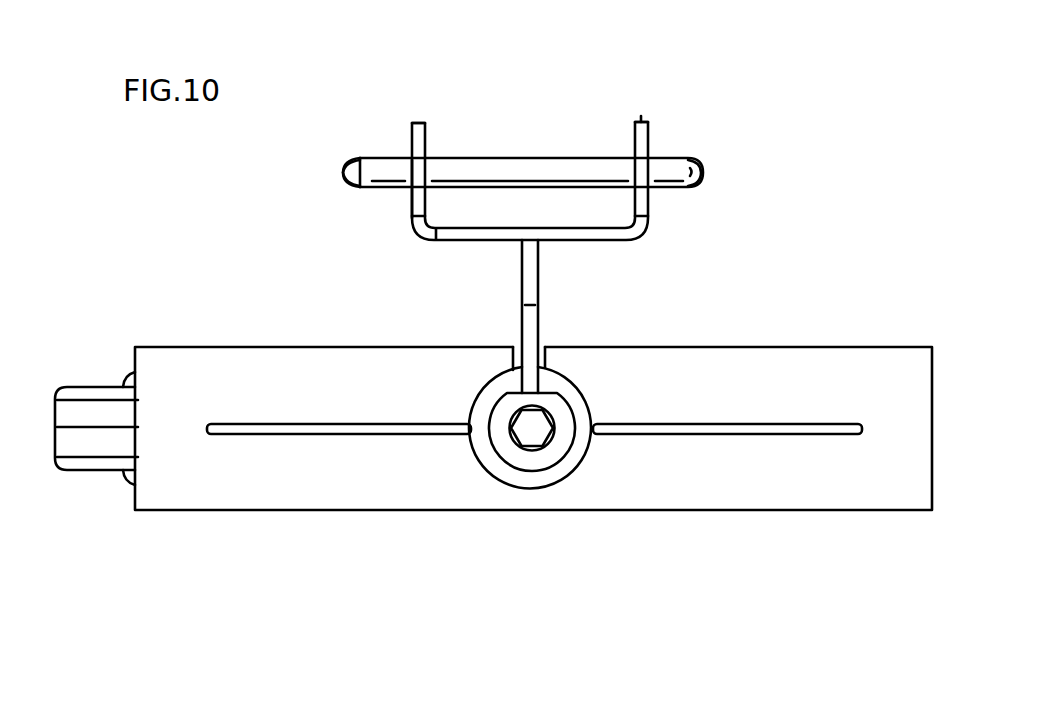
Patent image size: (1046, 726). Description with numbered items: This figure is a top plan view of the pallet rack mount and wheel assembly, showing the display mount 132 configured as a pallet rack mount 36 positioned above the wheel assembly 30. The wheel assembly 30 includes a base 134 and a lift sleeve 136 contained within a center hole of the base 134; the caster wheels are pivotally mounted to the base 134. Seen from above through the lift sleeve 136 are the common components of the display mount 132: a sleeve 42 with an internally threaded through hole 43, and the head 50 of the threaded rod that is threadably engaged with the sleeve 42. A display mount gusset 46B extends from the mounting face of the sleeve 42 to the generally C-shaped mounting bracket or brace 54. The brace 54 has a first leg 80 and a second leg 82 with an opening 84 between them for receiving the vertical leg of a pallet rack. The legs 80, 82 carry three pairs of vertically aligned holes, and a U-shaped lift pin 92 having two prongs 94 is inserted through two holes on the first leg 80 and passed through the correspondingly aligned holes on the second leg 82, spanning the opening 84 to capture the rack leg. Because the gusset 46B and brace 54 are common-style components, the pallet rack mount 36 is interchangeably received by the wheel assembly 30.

The wheel assembly 30 is at (493, 464).
The pallet rack mount 36 is at (652, 230).
The sleeve 42 is at (562, 442).
The internally threaded through hole 43 is at (541, 445).
The display mount gusset 46B is at (540, 281).
The head 50 is at (528, 433).
The mounting bracket 54 is at (396, 116).
The first leg 80 is at (648, 128).
The second leg 82 is at (406, 200).
The opening 84 is at (518, 137).
The lift pin 92 is at (712, 157).
The prongs 94 is at (365, 154).
The display mount 132 is at (475, 151).
The base 134 is at (188, 387).
The lift sleeve 136 is at (482, 403).